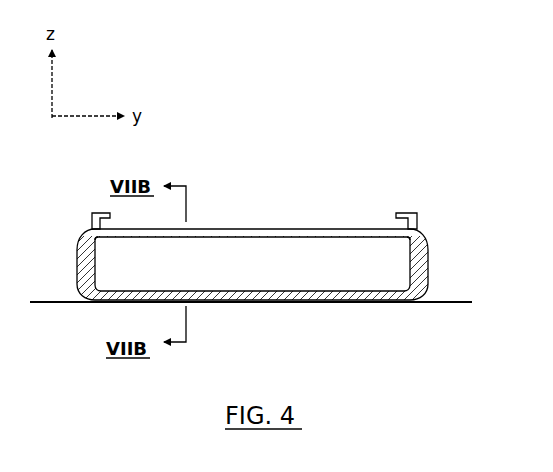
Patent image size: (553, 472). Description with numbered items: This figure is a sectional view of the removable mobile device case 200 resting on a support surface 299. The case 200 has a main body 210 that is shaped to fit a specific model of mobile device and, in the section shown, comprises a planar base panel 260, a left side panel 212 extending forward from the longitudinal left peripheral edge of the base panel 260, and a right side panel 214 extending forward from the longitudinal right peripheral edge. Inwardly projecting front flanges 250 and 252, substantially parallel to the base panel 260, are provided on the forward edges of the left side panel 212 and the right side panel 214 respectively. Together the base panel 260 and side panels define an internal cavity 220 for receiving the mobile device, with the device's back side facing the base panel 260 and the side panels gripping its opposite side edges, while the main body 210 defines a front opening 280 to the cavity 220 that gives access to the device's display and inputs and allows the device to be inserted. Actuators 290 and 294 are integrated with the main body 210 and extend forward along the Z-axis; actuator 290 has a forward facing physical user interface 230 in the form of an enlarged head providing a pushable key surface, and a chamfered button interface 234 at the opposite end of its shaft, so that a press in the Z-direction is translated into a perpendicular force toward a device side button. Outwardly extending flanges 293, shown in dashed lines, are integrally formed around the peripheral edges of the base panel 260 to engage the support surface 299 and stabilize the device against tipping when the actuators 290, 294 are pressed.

The mobile device case 200 is at (260, 234).
The main body 210 is at (100, 301).
The left side panel 212 is at (77, 260).
The right side panel 214 is at (430, 272).
The internal cavity 220 is at (285, 248).
The physical user interface 230 is at (100, 213).
The chamfered button interface 234 is at (408, 213).
The front flange 250 is at (103, 240).
The front flange 252 is at (402, 242).
The base panel 260 is at (235, 302).
The front opening 280 is at (210, 229).
The actuator 290 is at (88, 234).
The outwardly extending flanges 293 is at (78, 301).
The actuator 294 is at (424, 229).
The support surface 299 is at (470, 301).